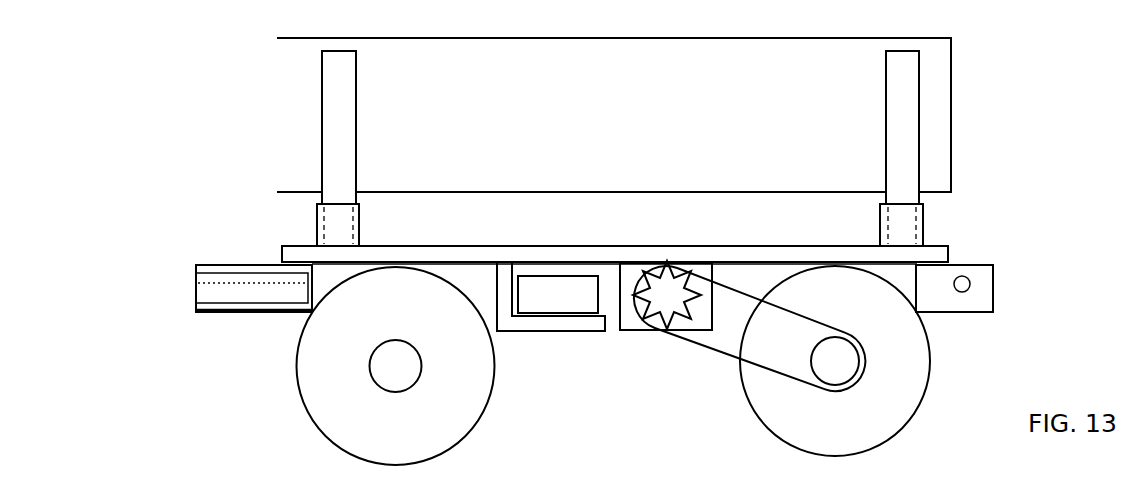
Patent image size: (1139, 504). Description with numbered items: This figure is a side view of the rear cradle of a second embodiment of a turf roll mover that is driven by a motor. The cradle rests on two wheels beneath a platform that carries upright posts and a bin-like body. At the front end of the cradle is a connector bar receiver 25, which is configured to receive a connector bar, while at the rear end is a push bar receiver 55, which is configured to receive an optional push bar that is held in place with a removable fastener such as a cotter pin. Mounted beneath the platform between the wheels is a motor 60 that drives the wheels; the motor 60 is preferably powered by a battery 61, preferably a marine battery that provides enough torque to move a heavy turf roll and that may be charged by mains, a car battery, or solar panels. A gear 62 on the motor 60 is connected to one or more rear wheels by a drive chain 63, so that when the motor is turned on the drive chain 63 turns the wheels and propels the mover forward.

The front connector bar receiver 25 is at (210, 288).
The push bar receiver 55 is at (984, 297).
The motor 60 is at (632, 329).
The battery 61 is at (533, 298).
The gear 62 is at (658, 298).
The drive chain 63 is at (728, 357).